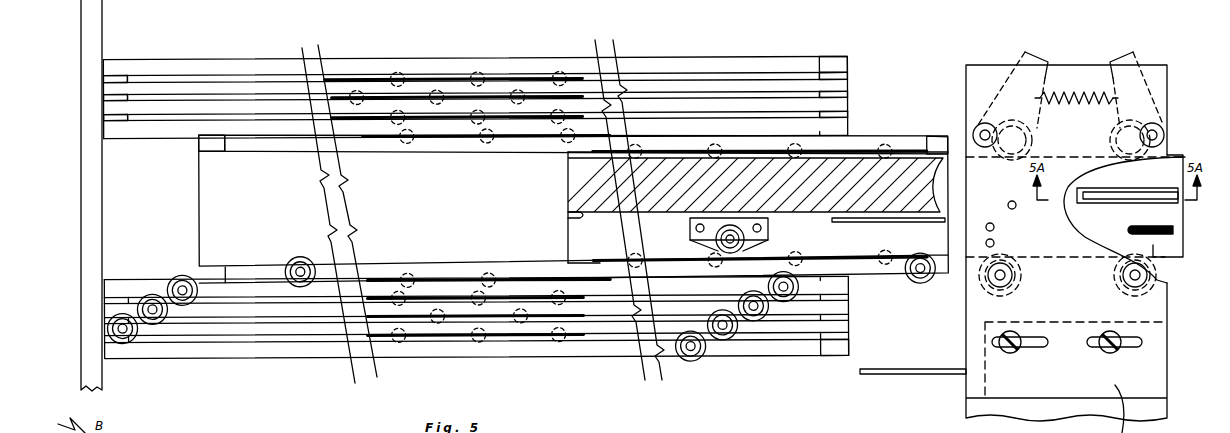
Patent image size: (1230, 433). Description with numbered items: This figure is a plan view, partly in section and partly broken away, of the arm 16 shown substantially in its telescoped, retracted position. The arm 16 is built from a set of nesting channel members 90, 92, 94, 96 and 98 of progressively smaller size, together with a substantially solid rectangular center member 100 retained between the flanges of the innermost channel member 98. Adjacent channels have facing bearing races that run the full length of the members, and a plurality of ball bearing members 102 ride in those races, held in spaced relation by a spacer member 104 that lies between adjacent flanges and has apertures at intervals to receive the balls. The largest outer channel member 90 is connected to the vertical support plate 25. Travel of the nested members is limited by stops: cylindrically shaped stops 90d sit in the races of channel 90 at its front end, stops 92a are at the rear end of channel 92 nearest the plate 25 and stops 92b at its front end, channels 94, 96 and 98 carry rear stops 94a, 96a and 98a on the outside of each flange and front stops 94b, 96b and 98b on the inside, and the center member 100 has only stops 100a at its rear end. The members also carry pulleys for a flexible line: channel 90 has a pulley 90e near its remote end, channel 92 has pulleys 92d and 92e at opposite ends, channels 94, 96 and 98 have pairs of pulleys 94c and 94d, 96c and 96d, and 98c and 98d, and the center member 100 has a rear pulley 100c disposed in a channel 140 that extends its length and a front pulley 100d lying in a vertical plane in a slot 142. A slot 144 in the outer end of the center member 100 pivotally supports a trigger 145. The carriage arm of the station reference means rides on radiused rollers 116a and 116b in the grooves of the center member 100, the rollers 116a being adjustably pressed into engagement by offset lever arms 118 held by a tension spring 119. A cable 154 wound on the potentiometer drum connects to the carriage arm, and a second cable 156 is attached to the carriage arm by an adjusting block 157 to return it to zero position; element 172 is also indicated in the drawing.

The vertical support plate 25 is at (86, 205).
The arm 16 is at (560, 366).
The channel member 90 is at (182, 66).
The channel member 92 is at (210, 90).
The channel member 94 is at (247, 108).
The channel member 96 is at (258, 128).
The channel member 98 is at (233, 147).
The cylindrical stops 92a is at (113, 82).
The stops 94a is at (107, 100).
The stops 96a is at (107, 121).
The stops 98a is at (207, 138).
The cylindrically shaped stops 90d is at (849, 75).
The stops 92b is at (849, 93).
The stops 94b is at (849, 112).
The stops 96b is at (849, 132).
The stops 98b is at (943, 152).
The ball bearing members 102 is at (400, 72).
The spacer member 104 is at (522, 78).
The center member 100 is at (572, 178).
The stops 100a is at (570, 157).
The rear pulley 100c is at (713, 249).
The front pulley 100d is at (1120, 263).
The channel 140 is at (578, 216).
The slot 142 is at (1127, 232).
The slot 144 is at (1108, 188).
The trigger 145 is at (1165, 191).
The cable 154 is at (872, 223).
The second cable 156 is at (895, 370).
The adjusting block 157 is at (1145, 322).
The lower support 172 is at (878, 432).
The rear pulley 92d is at (107, 330).
The rear pulley 94c is at (124, 305).
The rear pulley 96c is at (175, 276).
The rear pulley 98c is at (300, 256).
The front pulley 98d is at (922, 286).
The front pulley 96d is at (798, 287).
The front pulley 94d is at (768, 305).
The front pulley 92e is at (722, 341).
The pulley 90e is at (692, 362).
The offset lever arms 118 is at (1122, 60).
The tension spring 119 is at (1085, 90).
The radiused rollers 116a is at (1112, 140).
The radiused rollers 116b is at (1115, 287).